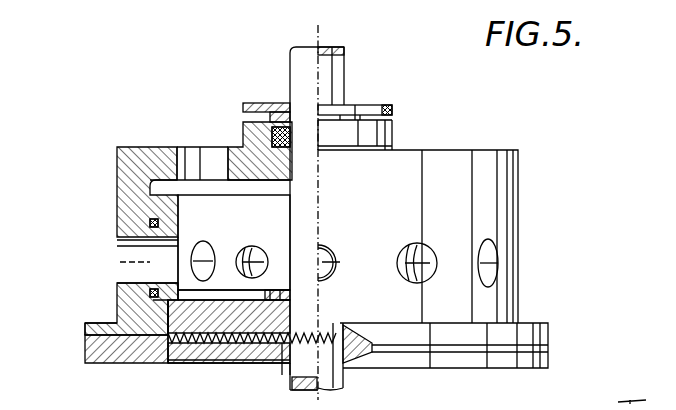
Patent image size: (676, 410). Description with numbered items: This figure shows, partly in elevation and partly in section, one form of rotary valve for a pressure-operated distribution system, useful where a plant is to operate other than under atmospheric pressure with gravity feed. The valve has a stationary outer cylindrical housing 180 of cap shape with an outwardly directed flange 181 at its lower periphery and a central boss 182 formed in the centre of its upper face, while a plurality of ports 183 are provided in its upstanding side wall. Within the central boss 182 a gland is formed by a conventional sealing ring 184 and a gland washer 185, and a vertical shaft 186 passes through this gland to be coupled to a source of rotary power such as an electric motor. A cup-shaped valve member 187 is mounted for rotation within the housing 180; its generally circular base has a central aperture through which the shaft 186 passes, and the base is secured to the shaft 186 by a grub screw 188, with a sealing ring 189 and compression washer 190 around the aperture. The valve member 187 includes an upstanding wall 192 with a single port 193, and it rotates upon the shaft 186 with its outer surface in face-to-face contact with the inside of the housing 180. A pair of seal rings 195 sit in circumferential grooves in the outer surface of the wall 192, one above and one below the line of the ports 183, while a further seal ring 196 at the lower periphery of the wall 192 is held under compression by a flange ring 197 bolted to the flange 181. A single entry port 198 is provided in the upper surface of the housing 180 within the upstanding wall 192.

The outer cylindrical housing 180 is at (520, 184).
The flange 181 is at (98, 318).
The central boss 182 is at (258, 133).
The ports 183 is at (138, 272).
The sealing ring 184 is at (285, 103).
The gland washer 185 is at (393, 108).
The vertical shaft 186 is at (333, 80).
The cup-shaped valve member 187 is at (196, 312).
The grub screw 188 is at (253, 340).
The sealing ring 189 is at (236, 338).
The compression washer 190 is at (273, 290).
The upstanding wall 192 is at (160, 200).
The port 193 is at (165, 253).
The seal rings 195 is at (151, 224).
The seal ring 196 is at (182, 304).
The flange ring 197 is at (100, 350).
The entry port 198 is at (200, 172).